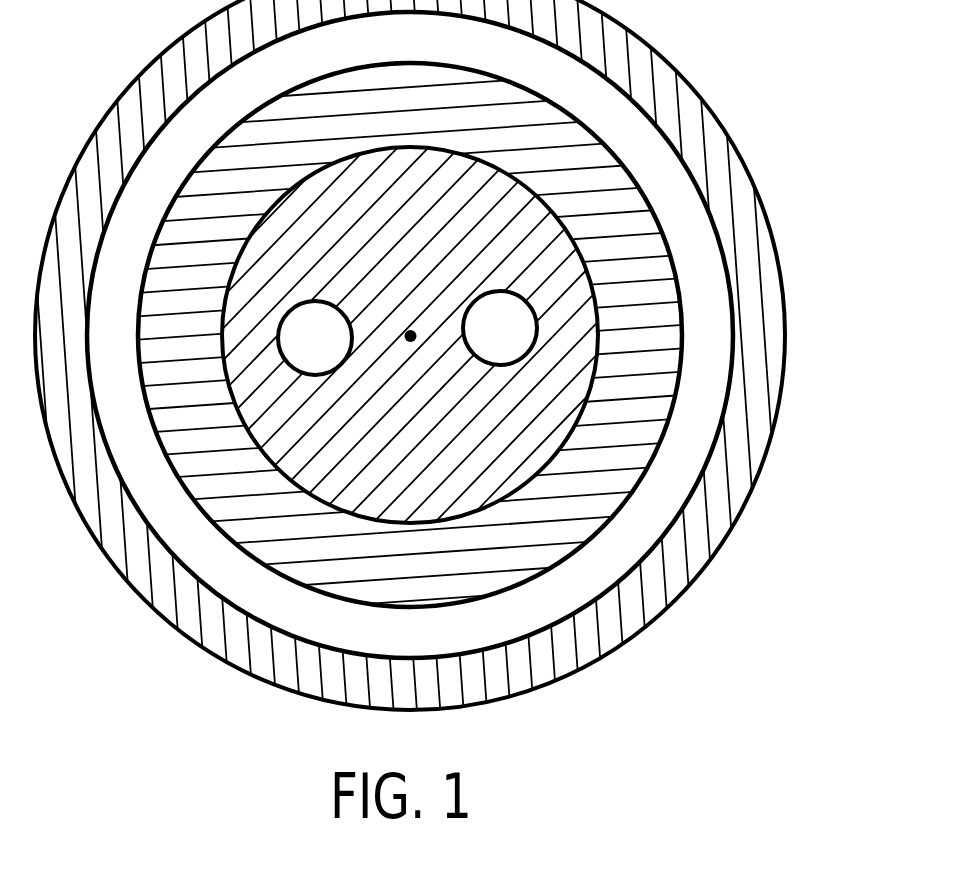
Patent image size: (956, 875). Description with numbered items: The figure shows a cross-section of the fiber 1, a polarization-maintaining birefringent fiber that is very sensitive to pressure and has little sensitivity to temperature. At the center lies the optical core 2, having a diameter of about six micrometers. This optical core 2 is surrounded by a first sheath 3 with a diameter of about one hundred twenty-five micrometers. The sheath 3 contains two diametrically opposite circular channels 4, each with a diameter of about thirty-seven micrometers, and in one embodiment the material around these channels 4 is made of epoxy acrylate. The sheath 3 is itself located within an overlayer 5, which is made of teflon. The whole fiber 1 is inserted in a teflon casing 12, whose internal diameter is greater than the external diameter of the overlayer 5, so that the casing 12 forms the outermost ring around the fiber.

The fiber 1 is at (620, 141).
The teflon casing 12 is at (730, 162).
The overlayer 5 is at (653, 282).
The first sheath 3 is at (577, 366).
The circular channels 4 is at (312, 358).
The optical core 2 is at (411, 333).